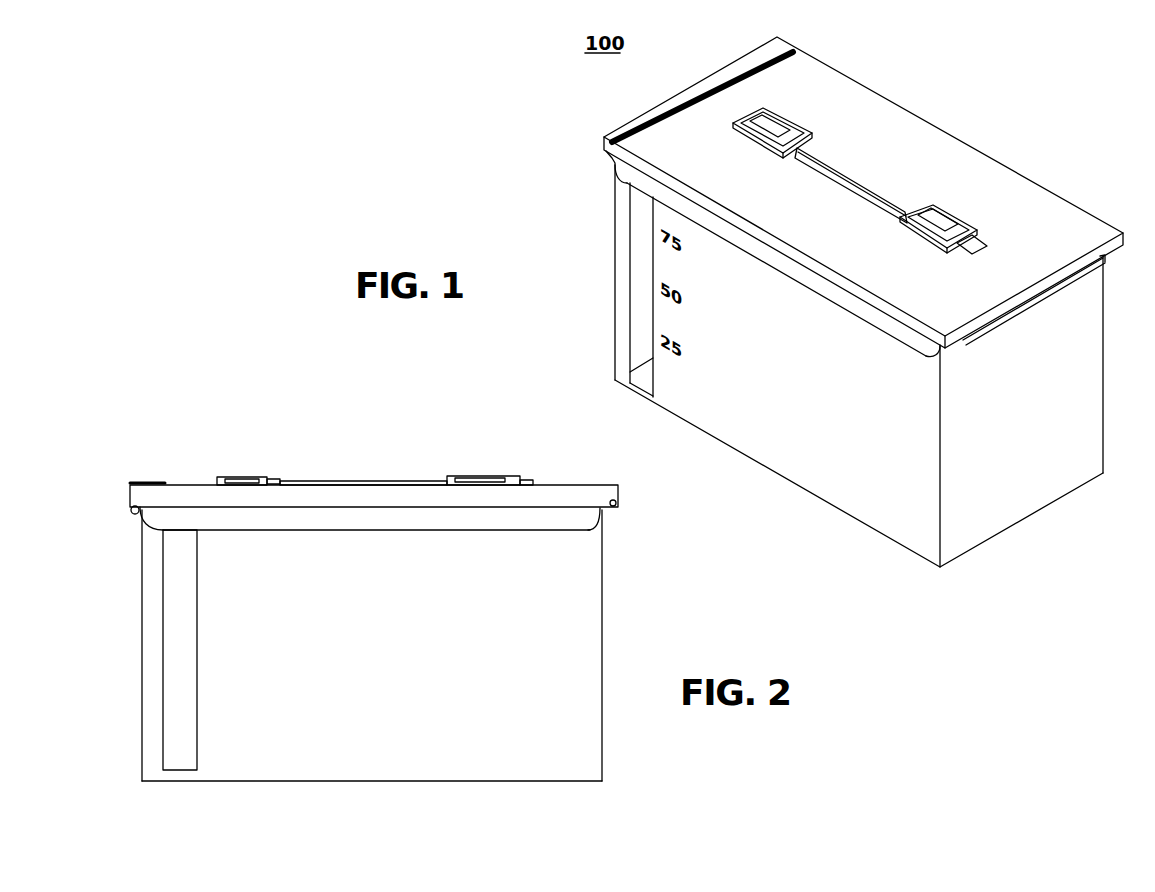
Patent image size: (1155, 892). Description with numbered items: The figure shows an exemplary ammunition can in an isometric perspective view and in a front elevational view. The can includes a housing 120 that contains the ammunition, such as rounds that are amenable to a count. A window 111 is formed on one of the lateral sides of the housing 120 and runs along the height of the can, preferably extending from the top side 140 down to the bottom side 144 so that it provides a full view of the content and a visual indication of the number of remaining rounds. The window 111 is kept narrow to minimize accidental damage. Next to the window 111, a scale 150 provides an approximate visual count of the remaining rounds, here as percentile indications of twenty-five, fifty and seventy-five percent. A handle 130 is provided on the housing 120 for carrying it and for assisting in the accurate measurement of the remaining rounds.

In FIG. 1, the window 111 is at (604, 290).
In FIG. 2, the window 111 is at (201, 669).
In FIG. 1, the housing 120 is at (876, 242).
In FIG. 2, the housing 120 is at (402, 480).
In FIG. 1, the handle 130 is at (890, 181).
In FIG. 2, the handle 130 is at (375, 464).
In FIG. 1, the top side 140 is at (863, 186).
In FIG. 1, the bottom side 144 is at (859, 473).
In FIG. 2, the bottom side 144 is at (394, 796).
In FIG. 2, the scale 150 is at (371, 657).